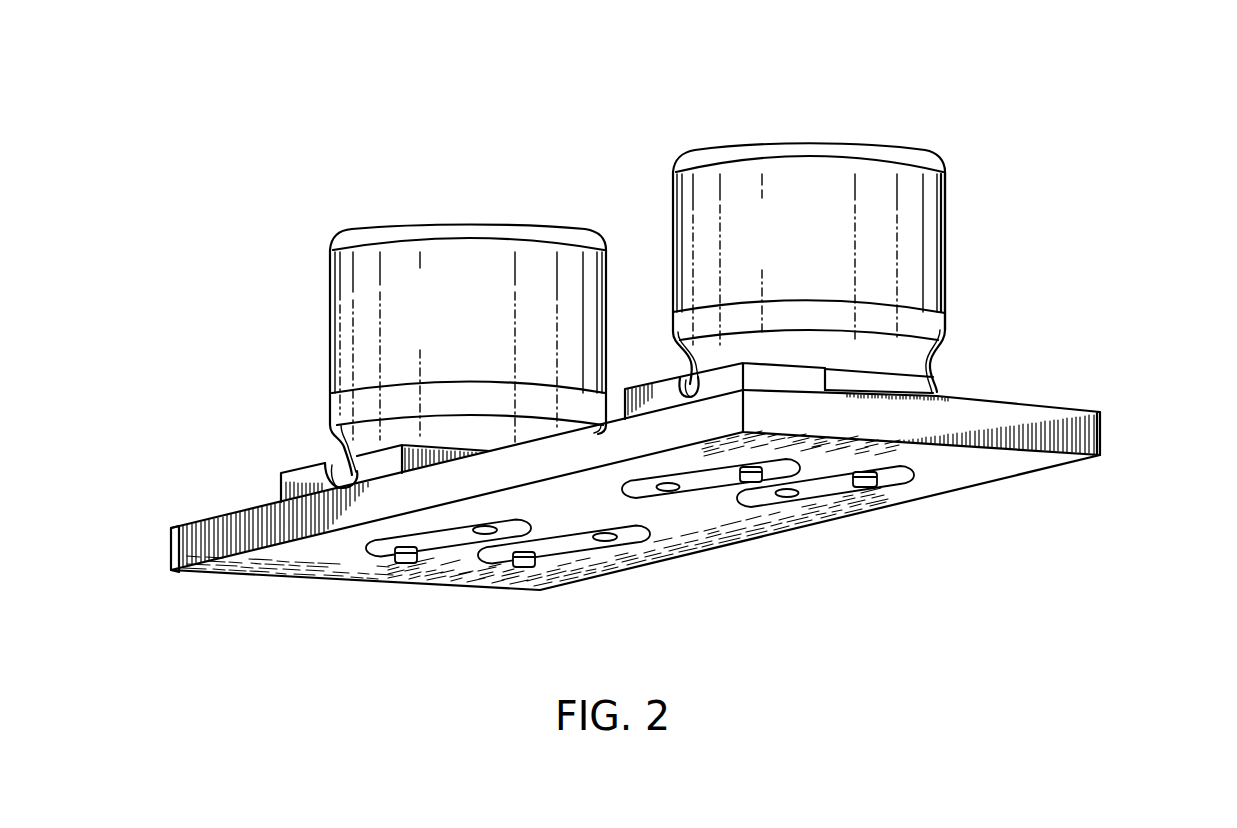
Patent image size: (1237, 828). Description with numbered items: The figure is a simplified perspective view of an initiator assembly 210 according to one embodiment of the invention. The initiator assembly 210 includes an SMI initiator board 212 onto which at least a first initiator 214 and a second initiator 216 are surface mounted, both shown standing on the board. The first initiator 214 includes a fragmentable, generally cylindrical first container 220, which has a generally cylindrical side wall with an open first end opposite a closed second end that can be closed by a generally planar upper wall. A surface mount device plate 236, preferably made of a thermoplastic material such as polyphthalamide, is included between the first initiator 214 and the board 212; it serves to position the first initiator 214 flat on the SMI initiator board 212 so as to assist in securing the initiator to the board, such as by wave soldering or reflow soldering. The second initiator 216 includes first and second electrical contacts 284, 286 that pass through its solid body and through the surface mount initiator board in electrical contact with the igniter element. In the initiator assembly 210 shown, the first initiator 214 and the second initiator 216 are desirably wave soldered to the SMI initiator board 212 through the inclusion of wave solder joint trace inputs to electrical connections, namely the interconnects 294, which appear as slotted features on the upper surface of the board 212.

The initiator assembly 210 is at (1004, 139).
The SMI initiator board 212 is at (1126, 391).
The first initiator 214 is at (796, 121).
The second initiator 216 is at (413, 193).
The first container 220 is at (953, 240).
The surface mount device (SMD) plate 236 is at (648, 382).
The first electrical contact 284 is at (527, 569).
The second electrical contact 286 is at (403, 563).
The interconnects 294 is at (706, 482).